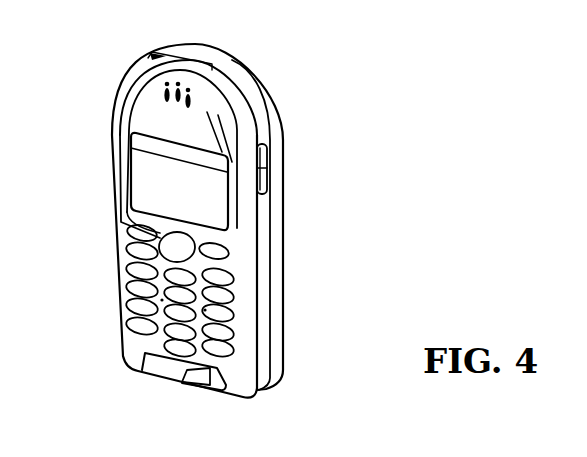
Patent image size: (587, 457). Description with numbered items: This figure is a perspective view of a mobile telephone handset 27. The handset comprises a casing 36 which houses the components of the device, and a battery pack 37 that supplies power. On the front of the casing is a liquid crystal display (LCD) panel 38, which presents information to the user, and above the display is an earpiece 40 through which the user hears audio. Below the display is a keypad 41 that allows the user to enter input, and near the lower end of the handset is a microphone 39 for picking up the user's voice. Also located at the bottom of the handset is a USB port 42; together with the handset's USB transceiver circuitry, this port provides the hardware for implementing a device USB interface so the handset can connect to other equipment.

The mobile telephone handset 27 is at (366, 89).
The casing 36 is at (268, 173).
The battery pack 37 is at (276, 285).
The liquid crystal display (LCD) panel 38 is at (178, 176).
The microphone 39 is at (173, 378).
The earpiece 40 is at (163, 97).
The keypad 41 is at (160, 300).
The USB port 42 is at (200, 385).